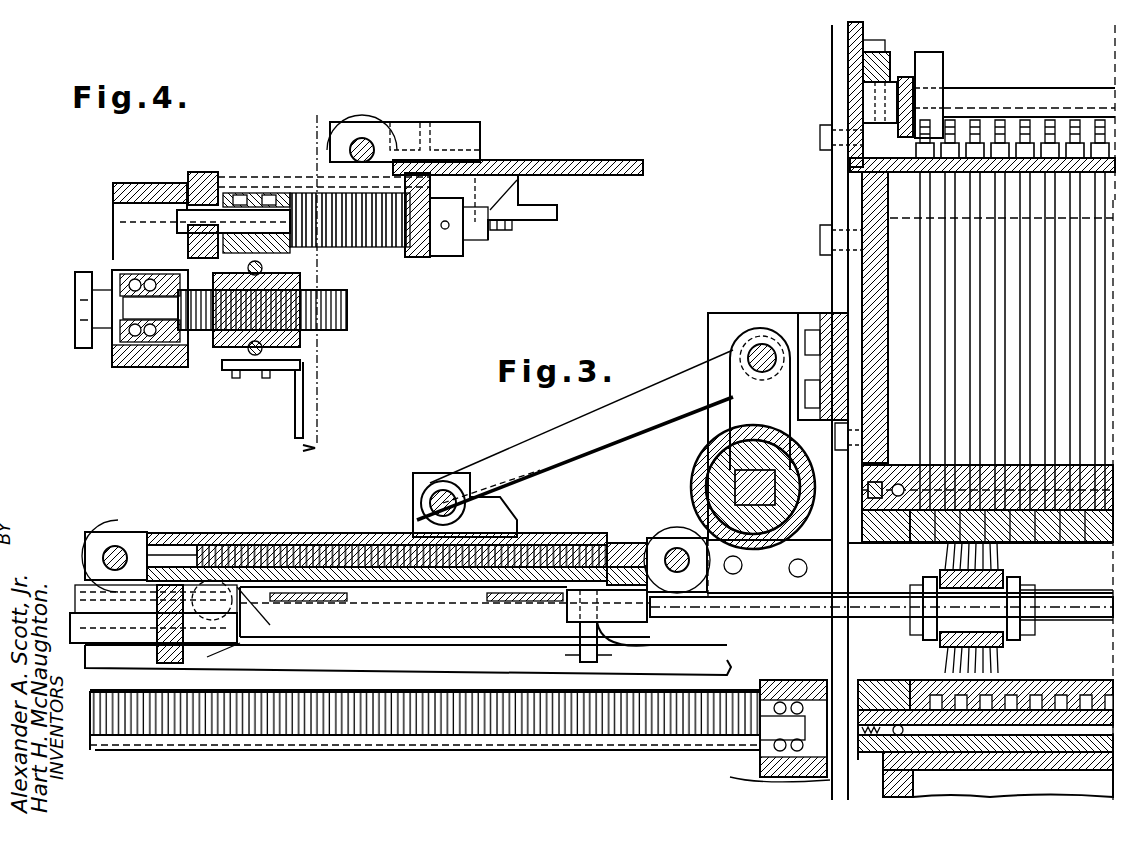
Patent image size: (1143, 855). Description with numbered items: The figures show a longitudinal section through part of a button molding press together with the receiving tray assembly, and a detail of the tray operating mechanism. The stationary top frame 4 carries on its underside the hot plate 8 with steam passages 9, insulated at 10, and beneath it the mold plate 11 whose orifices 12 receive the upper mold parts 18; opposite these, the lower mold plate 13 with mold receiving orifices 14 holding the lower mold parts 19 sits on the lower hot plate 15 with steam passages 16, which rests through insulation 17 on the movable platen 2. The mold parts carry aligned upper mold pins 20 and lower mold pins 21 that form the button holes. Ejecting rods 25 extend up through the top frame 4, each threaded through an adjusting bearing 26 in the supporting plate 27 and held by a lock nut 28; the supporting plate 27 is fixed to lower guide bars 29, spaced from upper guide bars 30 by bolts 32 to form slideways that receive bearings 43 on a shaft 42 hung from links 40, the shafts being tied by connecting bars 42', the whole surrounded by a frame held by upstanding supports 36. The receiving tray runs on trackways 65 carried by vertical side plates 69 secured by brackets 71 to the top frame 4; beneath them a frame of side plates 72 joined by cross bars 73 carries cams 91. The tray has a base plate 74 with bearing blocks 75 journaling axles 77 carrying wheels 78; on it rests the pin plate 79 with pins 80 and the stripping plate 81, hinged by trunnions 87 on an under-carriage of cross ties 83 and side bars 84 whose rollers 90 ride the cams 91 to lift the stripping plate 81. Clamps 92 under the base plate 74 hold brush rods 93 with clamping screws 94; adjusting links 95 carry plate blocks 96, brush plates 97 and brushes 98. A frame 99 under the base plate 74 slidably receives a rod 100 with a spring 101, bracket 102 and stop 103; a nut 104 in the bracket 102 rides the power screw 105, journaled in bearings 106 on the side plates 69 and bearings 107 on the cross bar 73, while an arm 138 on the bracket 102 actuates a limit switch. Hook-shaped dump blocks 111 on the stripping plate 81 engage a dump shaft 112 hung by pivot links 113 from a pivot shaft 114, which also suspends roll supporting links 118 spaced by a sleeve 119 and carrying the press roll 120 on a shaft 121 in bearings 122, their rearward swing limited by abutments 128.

In FIG. 3, the movable platen 2 is at (1078, 768).
In FIG. 3, the top frame 4 is at (870, 202).
In FIG. 3, the hot plate 8 is at (866, 490).
In FIG. 3, the steam passages 9 is at (900, 484).
In FIG. 3, the insulation 10 is at (1093, 463).
In FIG. 3, the mold plate 11 is at (868, 540).
In FIG. 3, the orifices 12 is at (895, 545).
In FIG. 3, the lower mold plate 13 is at (905, 680).
In FIG. 3, the mold receiving orifices 14 is at (858, 685).
In FIG. 3, the lower hot plate 15 is at (892, 770).
In FIG. 3, the steam passages 16 is at (862, 729).
In FIG. 3, the insulation 17 is at (872, 752).
In FIG. 3, the upper mold parts 18 is at (1060, 545).
In FIG. 3, the lower mold parts 19 is at (1068, 680).
In FIG. 3, the upper mold pins 20 is at (1015, 550).
In FIG. 3, the lower mold pins 21 is at (1025, 680).
In FIG. 3, the rods 25 is at (1077, 312).
In FIG. 3, the adjusting bearing 26 is at (1000, 143).
In FIG. 3, the supporting plate 27 is at (860, 170).
In FIG. 3, the lock nut 28 is at (955, 143).
In FIG. 4, the lower guide bars 29 is at (316, 280).
In FIG. 3, the lower guide bars 29 is at (857, 153).
In FIG. 3, the upper guide bars 30 is at (850, 65).
In FIG. 3, the bolts 32 is at (850, 43).
In FIG. 3, the upstanding supports 36 is at (840, 85).
In FIG. 3, the links 40 is at (935, 65).
In FIG. 3, the shaft 42 is at (1029, 88).
In FIG. 3, the connecting bars 42' is at (920, 81).
In FIG. 3, the bearings 43 is at (867, 100).
In FIG. 3, the trackways 65 is at (1095, 605).
In FIG. 3, the vertical side plates 69 is at (728, 323).
In FIG. 3, the brackets 71 is at (803, 317).
In FIG. 3, the side plates 72 is at (243, 747).
In FIG. 4, the cross bars 73 is at (150, 185).
In FIG. 4, the base plate 74 is at (592, 162).
In FIG. 3, the base plate 74 is at (445, 612).
In FIG. 4, the bearing blocks 75 is at (437, 127).
In FIG. 3, the bearing blocks 75 is at (92, 537).
In FIG. 4, the axles 77 is at (350, 148).
In FIG. 3, the axles 77 is at (107, 560).
In FIG. 4, the wheels 78 is at (387, 117).
In FIG. 3, the wheels 78 is at (444, 543).
In FIG. 3, the pin plate 79 is at (373, 543).
In FIG. 3, the pins 80 is at (307, 533).
In FIG. 3, the stripping plate 81 is at (187, 532).
In FIG. 3, the cross ties 83 is at (335, 601).
In FIG. 3, the side bars 84 is at (387, 627).
In FIG. 3, the trunnions 87 is at (615, 540).
In FIG. 3, the rollers 90 is at (233, 645).
In FIG. 3, the cams 91 is at (473, 667).
In FIG. 3, the clamps 92 is at (650, 613).
In FIG. 3, the brush rods 93 is at (787, 610).
In FIG. 3, the clamping screws 94 is at (583, 657).
In FIG. 3, the adjusting links 95 is at (1022, 625).
In FIG. 3, the plate blocks 96 is at (923, 620).
In FIG. 3, the brush plates 97 is at (940, 575).
In FIG. 3, the brushes 98 is at (940, 650).
In FIG. 4, the frame 99 is at (322, 250).
In FIG. 3, the frame 99 is at (220, 621).
In FIG. 4, the rod 100 is at (177, 223).
In FIG. 3, the rod 100 is at (150, 613).
In FIG. 4, the spring 101 is at (375, 255).
In FIG. 4, the bracket 102 is at (255, 195).
In FIG. 4, the stop 103 is at (455, 250).
In FIG. 4, the nut 104 is at (220, 365).
In FIG. 4, the power screw 105 is at (340, 330).
In FIG. 3, the power screw 105 is at (513, 727).
In FIG. 3, the bearings 106 is at (760, 779).
In FIG. 4, the bearings 107 is at (137, 267).
In FIG. 3, the dump blocks 111 is at (437, 472).
In FIG. 3, the dump shaft 112 is at (493, 478).
In FIG. 3, the pivot links 113 is at (648, 390).
In FIG. 3, the pivot shaft 114 is at (748, 353).
In FIG. 3, the roll supporting links 118 is at (737, 393).
In FIG. 3, the sleeve 119 is at (760, 375).
In FIG. 3, the press roll 120 is at (715, 470).
In FIG. 3, the shaft 121 is at (750, 470).
In FIG. 3, the bearings 122 is at (720, 497).
In FIG. 3, the abutments 128 is at (708, 425).
In FIG. 4, the arm 138 is at (303, 410).